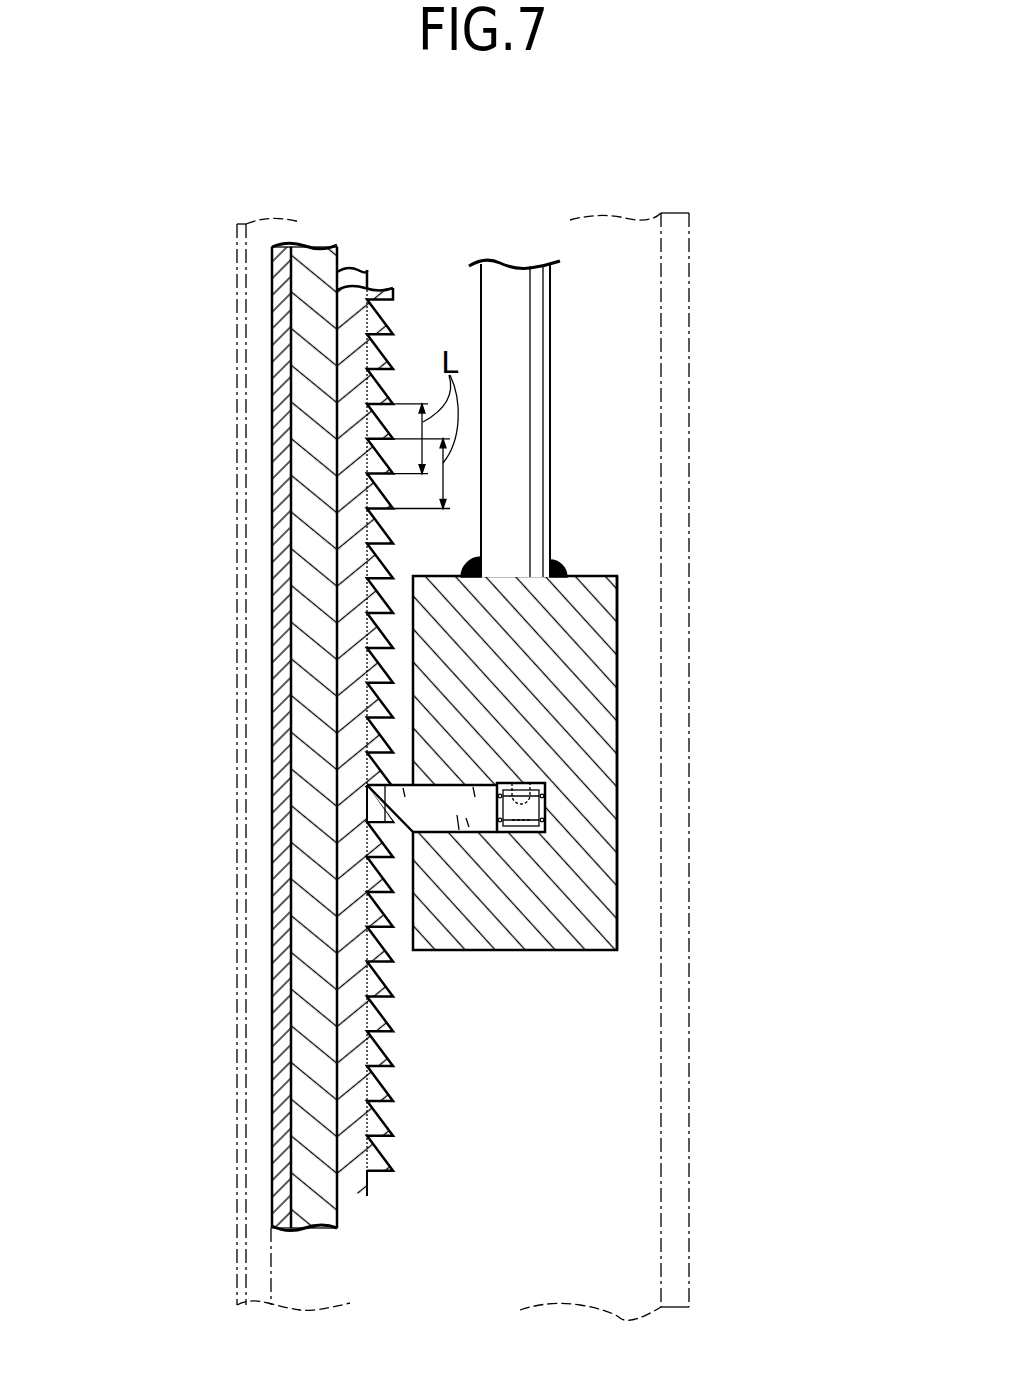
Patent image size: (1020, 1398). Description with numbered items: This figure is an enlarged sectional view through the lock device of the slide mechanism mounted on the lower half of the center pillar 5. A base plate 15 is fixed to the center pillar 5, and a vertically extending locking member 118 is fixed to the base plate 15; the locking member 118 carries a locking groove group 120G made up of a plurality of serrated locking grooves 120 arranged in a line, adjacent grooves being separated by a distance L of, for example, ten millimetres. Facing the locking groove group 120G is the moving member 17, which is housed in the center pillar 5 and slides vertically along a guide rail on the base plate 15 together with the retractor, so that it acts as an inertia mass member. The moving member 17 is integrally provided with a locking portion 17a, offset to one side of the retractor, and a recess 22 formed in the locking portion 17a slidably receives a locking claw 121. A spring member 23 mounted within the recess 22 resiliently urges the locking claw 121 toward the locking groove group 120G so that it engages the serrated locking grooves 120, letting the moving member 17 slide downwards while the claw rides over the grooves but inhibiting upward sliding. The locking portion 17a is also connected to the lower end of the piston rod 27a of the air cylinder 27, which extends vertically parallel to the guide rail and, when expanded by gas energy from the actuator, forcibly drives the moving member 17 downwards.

The center pillar 5 is at (689, 515).
The base plate 15 is at (315, 264).
The moving member 17 is at (634, 657).
The locking portion 17a is at (592, 733).
The recess 22 is at (513, 790).
The spring member 23 is at (545, 818).
The air cylinder 27 is at (556, 343).
The piston rod 27a is at (508, 275).
The locking member 118 is at (331, 744).
The locking groove 120 is at (388, 775).
The locking groove group 120G is at (165, 793).
The locking claw 121 is at (455, 818).